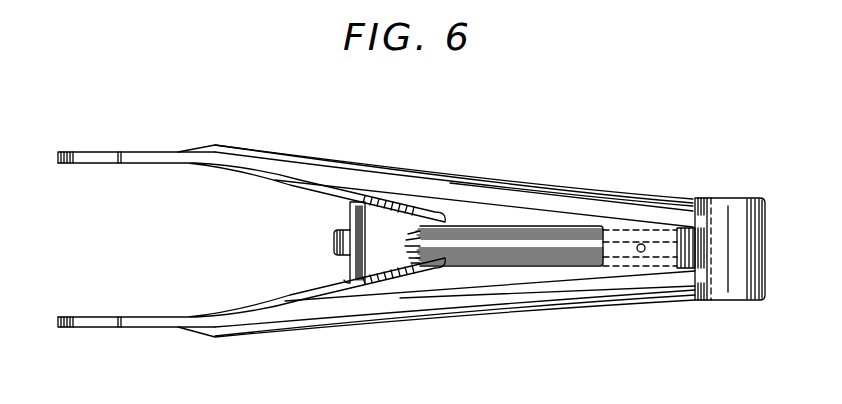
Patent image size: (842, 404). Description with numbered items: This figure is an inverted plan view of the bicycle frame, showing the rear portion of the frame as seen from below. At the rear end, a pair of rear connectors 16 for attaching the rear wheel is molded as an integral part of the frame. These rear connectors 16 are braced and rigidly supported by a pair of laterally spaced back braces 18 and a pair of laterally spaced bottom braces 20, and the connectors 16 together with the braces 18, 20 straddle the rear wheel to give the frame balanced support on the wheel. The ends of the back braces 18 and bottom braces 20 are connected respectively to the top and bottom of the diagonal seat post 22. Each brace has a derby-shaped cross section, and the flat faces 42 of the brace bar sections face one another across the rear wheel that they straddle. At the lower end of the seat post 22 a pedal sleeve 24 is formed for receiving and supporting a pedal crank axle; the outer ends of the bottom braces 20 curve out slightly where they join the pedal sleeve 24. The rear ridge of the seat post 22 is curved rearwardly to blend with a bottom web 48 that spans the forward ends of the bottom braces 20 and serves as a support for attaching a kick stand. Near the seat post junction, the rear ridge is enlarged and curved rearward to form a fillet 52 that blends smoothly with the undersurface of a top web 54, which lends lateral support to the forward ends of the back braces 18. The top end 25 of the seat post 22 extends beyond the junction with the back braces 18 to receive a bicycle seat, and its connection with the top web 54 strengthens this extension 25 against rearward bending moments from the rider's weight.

The rear connectors 16 is at (86, 164).
The back braces 18 is at (280, 191).
The bottom braces 20 is at (430, 158).
The diagonal seat post 22 is at (467, 279).
The pedal sleeve 24 is at (760, 199).
The top end of the seat post 25 is at (333, 249).
The flat faces 42 is at (475, 200).
The bottom web 48 is at (618, 247).
The fillet 52 is at (412, 247).
The top web 54 is at (374, 220).